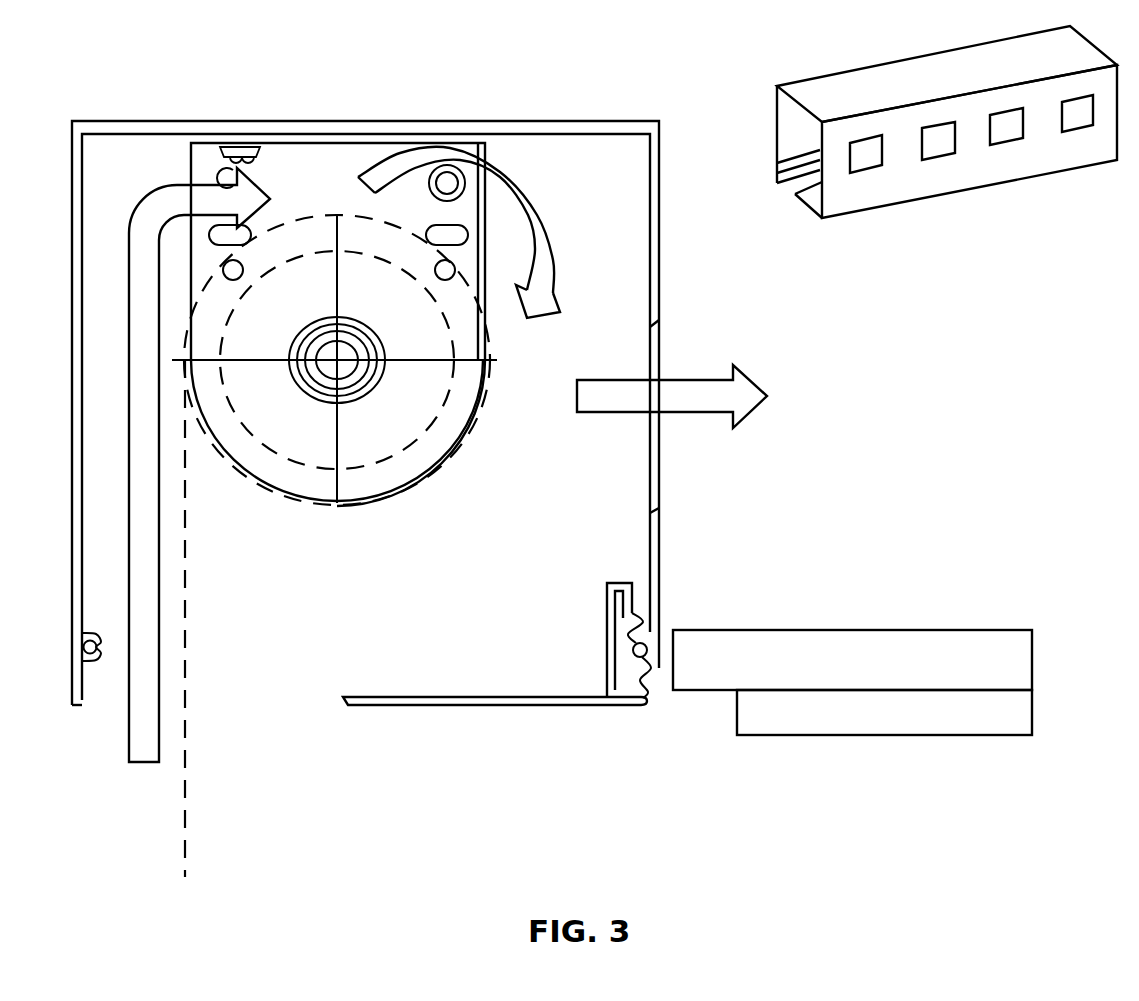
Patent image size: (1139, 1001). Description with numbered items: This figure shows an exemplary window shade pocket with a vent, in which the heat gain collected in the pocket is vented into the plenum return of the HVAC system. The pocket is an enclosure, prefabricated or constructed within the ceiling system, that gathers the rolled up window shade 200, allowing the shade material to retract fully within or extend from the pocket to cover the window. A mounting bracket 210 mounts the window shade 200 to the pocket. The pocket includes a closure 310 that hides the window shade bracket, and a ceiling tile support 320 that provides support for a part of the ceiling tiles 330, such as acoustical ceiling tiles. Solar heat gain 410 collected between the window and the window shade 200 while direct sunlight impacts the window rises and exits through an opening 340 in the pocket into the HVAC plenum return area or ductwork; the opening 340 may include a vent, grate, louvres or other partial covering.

The window shade 200 is at (206, 867).
The mounting bracket 210 is at (498, 333).
The closure 310 is at (455, 683).
The ceiling tile support 320 is at (658, 720).
The ceiling tiles 330 is at (860, 618).
The opening 340 is at (684, 313).
The solar heat gain 410 is at (134, 776).